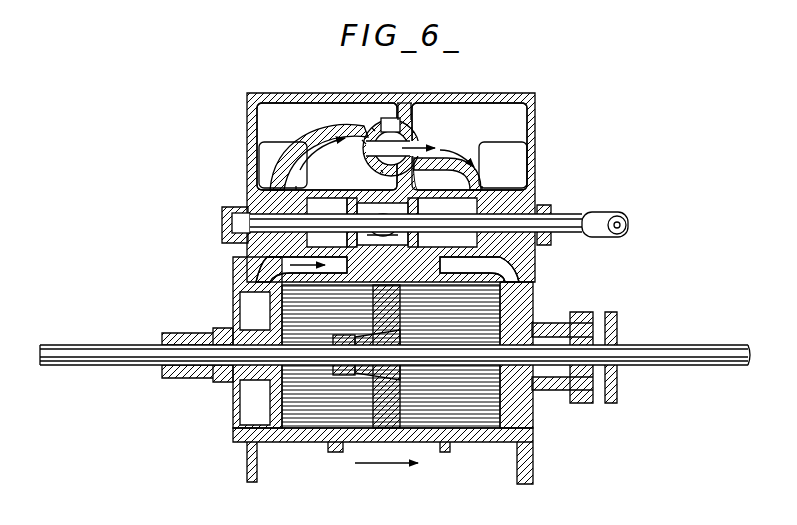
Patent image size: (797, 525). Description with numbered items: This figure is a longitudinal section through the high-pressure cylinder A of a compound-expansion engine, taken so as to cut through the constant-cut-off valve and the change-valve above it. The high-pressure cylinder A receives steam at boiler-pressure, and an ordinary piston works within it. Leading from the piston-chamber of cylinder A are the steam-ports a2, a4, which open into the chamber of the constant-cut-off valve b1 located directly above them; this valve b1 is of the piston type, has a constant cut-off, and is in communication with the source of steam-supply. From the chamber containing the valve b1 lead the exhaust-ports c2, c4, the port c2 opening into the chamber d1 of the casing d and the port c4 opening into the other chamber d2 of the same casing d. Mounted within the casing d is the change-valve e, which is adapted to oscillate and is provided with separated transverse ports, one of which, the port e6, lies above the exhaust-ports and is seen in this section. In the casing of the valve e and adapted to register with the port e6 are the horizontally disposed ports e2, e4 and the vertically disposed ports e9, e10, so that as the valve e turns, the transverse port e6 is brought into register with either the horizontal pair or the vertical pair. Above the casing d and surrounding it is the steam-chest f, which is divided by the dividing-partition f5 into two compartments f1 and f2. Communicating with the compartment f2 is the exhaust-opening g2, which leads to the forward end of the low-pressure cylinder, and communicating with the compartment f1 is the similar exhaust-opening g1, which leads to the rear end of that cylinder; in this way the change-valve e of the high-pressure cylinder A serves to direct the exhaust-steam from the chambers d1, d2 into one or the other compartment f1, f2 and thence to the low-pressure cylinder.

The casing d is at (322, 160).
The chamber d1 is at (327, 163).
The chamber d2 is at (447, 170).
The valve e is at (412, 140).
The port e2 is at (362, 141).
The port e4 is at (430, 151).
The transverse port e6 is at (372, 128).
The port e9 is at (381, 170).
The port e10 is at (391, 118).
The steam-chest f is at (404, 103).
The compartment f1 is at (327, 146).
The compartment f2 is at (469, 146).
The dividing-partition f5 is at (414, 130).
The exhaust-opening g1 is at (283, 165).
The exhaust-opening g2 is at (503, 165).
The exhaust-port c2 is at (306, 195).
The exhaust-port c4 is at (492, 177).
The constant-cut-off valve b1 is at (508, 200).
The steam-port a2 is at (264, 272).
The steam-port a4 is at (525, 272).
The high-pressure cylinder A is at (391, 356).